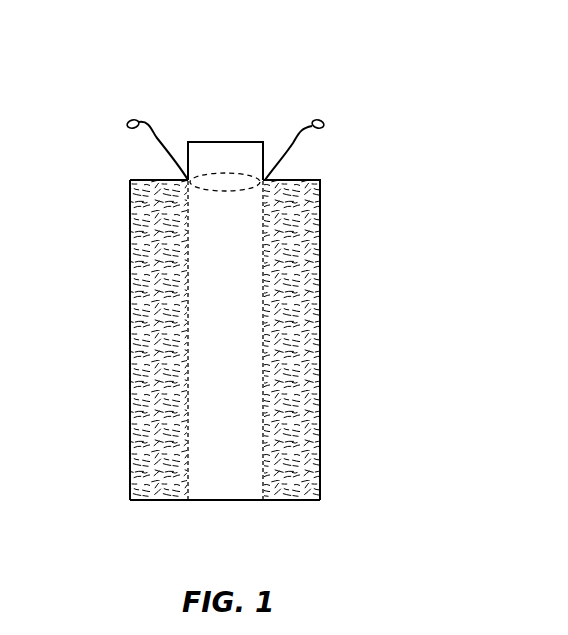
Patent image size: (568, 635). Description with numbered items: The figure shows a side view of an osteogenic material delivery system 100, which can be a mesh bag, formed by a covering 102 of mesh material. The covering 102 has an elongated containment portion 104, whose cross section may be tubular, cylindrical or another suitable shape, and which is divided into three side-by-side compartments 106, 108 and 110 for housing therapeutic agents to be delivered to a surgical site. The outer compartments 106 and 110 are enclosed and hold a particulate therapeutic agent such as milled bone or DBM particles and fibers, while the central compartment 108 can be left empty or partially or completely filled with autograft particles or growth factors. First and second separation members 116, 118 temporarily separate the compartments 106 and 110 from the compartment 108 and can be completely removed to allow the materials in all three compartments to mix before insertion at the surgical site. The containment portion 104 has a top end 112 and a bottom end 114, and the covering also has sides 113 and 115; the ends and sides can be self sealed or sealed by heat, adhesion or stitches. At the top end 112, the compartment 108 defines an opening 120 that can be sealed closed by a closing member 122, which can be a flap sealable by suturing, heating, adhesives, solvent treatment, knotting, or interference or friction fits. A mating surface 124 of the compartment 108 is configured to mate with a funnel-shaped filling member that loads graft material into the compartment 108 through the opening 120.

The delivery system 100 is at (277, 296).
The covering 102 is at (232, 338).
The elongated containment portion 104 is at (320, 240).
The compartment 106 is at (147, 373).
The compartment 108 is at (205, 483).
The compartment 110 is at (294, 442).
The top end 112 is at (148, 180).
The side 113 is at (130, 318).
The bottom end 114 is at (157, 500).
The side 115 is at (320, 392).
The first separation member 116 is at (163, 128).
The second separation member 118 is at (333, 118).
The opening 120 is at (228, 165).
The closing member 122 is at (263, 143).
The mating surface 124 is at (245, 190).